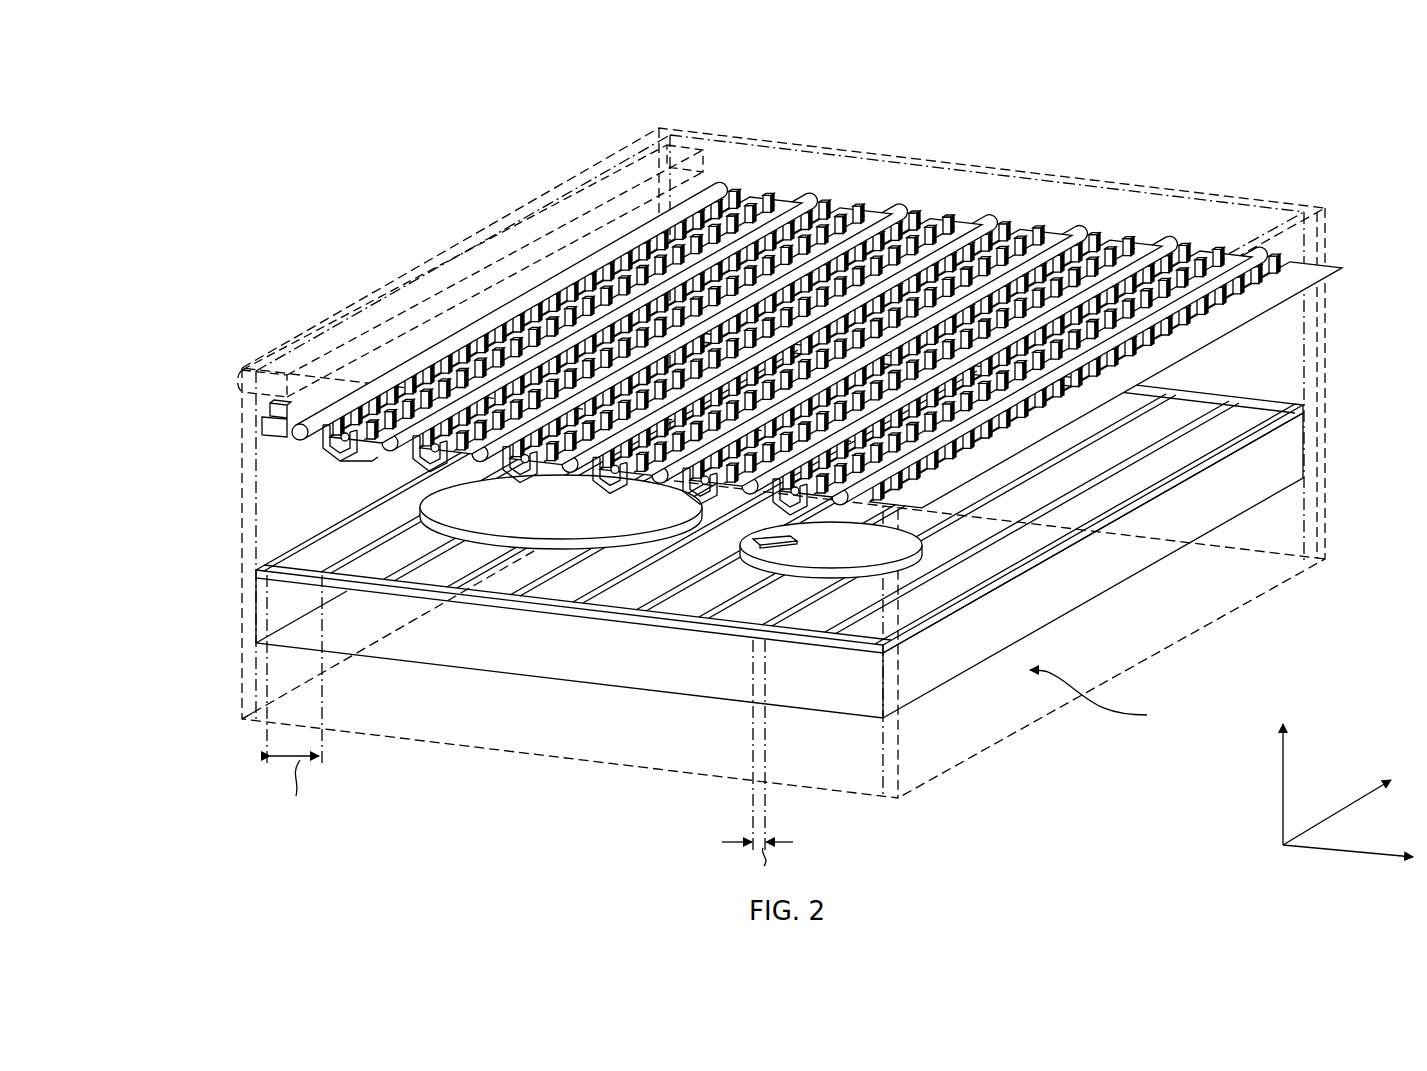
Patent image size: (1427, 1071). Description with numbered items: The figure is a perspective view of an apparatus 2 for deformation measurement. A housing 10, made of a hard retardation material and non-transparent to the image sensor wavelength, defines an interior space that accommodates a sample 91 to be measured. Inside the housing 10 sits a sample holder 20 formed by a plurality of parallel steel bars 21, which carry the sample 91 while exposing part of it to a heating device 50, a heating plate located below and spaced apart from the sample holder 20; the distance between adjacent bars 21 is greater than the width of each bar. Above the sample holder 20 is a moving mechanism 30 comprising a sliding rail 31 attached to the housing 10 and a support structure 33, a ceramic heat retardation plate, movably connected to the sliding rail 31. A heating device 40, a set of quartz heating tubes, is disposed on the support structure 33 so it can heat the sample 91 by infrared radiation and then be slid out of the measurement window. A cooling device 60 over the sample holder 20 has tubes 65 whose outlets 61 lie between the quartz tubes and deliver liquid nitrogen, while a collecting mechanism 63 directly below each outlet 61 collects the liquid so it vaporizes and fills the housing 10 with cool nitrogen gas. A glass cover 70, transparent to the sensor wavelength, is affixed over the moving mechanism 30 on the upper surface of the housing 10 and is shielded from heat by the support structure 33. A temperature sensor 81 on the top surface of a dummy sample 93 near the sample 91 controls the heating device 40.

The apparatus 2 is at (156, 58).
The housing 10 is at (248, 605).
The sample holder 20 is at (727, 585).
The bars 21 is at (670, 598).
The moving mechanism 30 is at (195, 397).
The sliding rail 31 is at (265, 422).
The support structure 33 is at (277, 407).
The heating device 40 is at (1168, 250).
The heating device 50 is at (1297, 510).
The cooling device 60 is at (453, 481).
The outlet 61 is at (343, 463).
The collecting mechanism 63 is at (373, 460).
The tubes 65 is at (341, 437).
The cover 70 is at (296, 375).
The temperature sensor 81 is at (762, 543).
The sample 91 is at (635, 528).
The dummy sample 93 is at (812, 682).